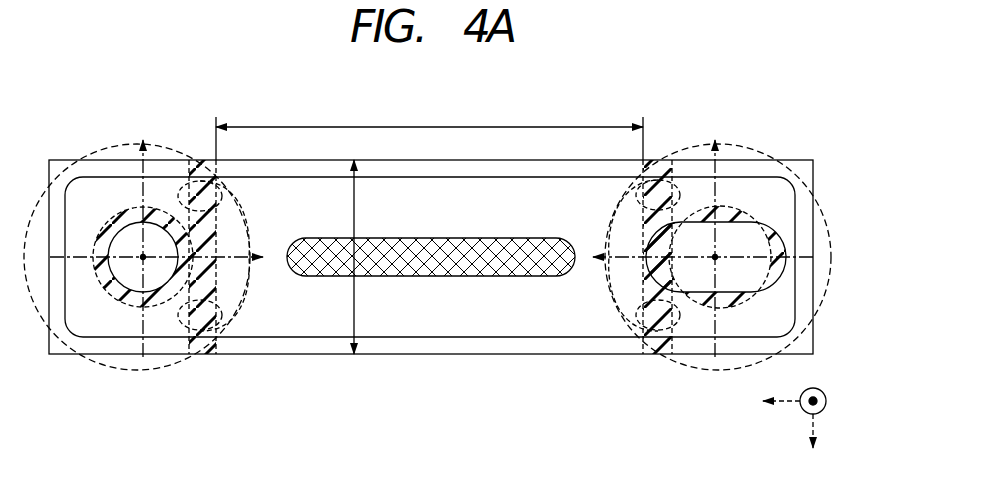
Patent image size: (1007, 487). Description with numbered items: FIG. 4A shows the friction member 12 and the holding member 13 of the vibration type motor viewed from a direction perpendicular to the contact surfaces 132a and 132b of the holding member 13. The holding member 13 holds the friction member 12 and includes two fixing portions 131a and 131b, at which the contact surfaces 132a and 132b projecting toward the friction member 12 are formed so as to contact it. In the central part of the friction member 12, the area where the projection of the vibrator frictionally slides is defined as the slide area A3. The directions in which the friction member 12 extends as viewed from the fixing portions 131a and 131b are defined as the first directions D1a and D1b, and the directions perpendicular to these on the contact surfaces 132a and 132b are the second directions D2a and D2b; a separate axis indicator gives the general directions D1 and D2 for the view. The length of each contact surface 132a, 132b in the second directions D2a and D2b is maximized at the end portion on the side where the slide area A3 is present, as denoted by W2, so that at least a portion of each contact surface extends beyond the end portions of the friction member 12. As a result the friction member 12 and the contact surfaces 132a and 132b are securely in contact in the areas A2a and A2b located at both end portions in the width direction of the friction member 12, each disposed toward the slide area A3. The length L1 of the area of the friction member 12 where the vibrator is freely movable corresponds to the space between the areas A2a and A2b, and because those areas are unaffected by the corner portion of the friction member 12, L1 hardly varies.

The friction member 12 is at (385, 318).
The holding member 13 is at (476, 343).
The fixing portion 131a is at (112, 370).
The fixing portion 131b is at (693, 368).
The contact surface 132a is at (220, 226).
The contact surface 132b is at (640, 226).
The area A2a is at (224, 191).
The area A2b is at (640, 193).
The slide area A3 is at (421, 262).
The first direction D1a is at (172, 275).
The first direction D1b is at (695, 275).
The second direction D2a is at (168, 238).
The second direction D2b is at (740, 237).
The length L1 is at (429, 228).
The length of contact surface in second direction W2 is at (336, 257).
The first direction D1 is at (779, 401).
The second direction D2 is at (817, 448).